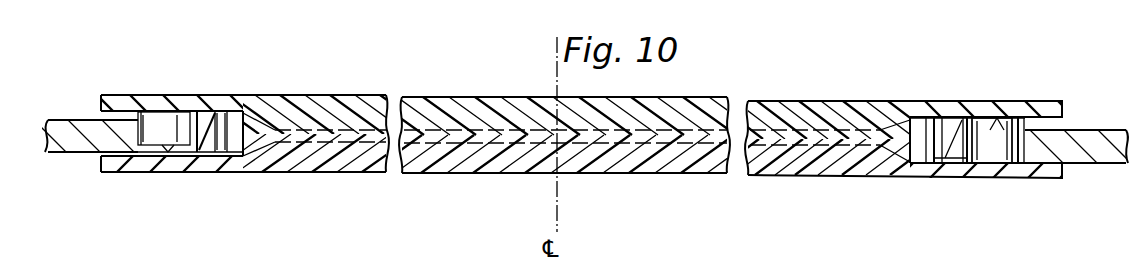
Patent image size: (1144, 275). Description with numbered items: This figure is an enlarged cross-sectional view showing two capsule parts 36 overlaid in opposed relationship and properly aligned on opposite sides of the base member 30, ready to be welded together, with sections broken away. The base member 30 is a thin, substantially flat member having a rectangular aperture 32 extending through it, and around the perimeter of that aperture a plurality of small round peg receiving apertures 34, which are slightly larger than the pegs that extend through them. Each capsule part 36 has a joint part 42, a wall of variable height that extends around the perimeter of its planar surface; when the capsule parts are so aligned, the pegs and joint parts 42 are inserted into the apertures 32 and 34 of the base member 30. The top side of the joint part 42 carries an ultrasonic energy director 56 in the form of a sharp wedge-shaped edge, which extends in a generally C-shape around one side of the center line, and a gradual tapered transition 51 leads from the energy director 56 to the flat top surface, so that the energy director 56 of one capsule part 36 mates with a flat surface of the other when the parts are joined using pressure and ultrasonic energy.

The base member 30 is at (66, 119).
The aperture 32 is at (222, 157).
The peg receiving apertures 34 is at (140, 157).
The capsule part 36 is at (215, 94).
The joint part 42 is at (327, 121).
The tapered transition 51 is at (593, 140).
The ultrasonic energy director 56 is at (340, 140).